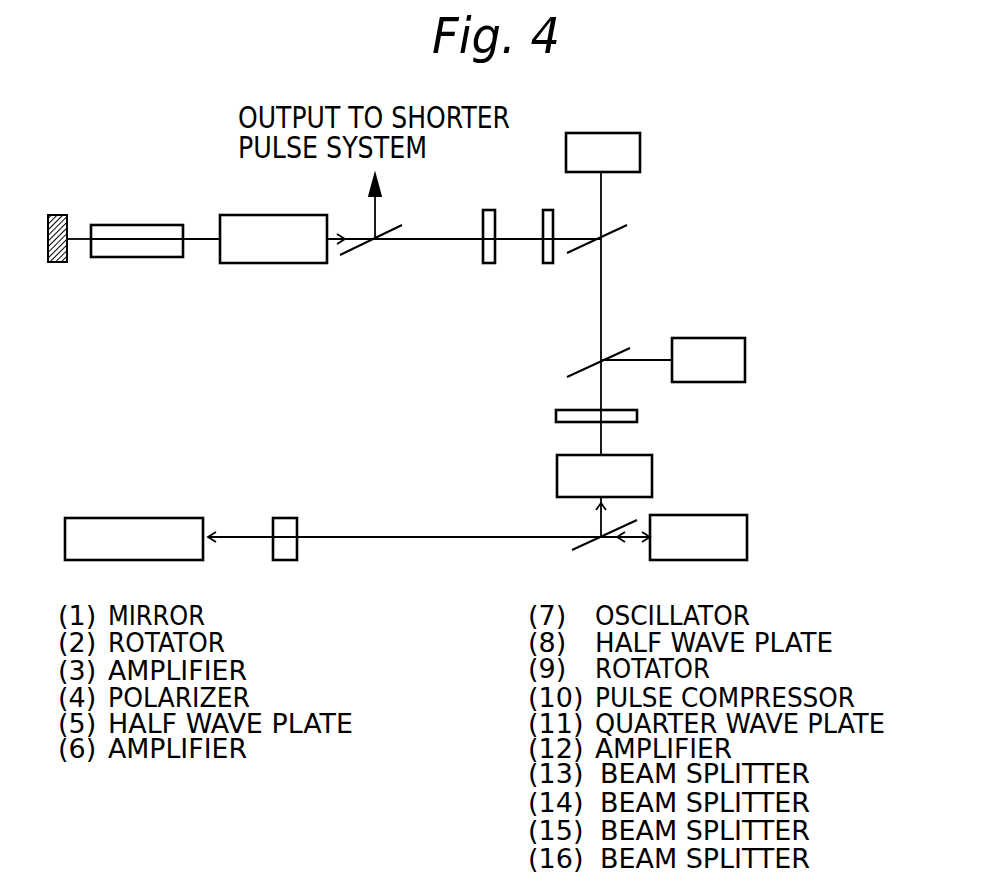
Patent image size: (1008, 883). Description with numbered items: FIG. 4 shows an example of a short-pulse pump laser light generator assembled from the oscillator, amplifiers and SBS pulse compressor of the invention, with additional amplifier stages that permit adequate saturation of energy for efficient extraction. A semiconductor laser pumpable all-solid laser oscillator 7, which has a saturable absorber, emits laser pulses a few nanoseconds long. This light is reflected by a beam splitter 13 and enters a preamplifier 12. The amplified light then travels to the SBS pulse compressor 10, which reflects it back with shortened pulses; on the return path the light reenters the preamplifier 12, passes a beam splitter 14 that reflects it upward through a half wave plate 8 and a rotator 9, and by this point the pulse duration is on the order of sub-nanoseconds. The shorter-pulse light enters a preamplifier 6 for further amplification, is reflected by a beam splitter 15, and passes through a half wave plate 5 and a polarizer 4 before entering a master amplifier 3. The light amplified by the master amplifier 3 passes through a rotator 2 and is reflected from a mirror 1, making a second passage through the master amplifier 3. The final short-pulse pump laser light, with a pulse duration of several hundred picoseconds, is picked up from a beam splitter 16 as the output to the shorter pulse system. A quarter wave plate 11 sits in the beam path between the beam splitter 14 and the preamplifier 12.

The mirror 1 is at (72, 218).
The rotator 2 is at (137, 222).
The master amplifier 3 is at (297, 234).
The polarizer 4 is at (491, 256).
The half wave plate 5 is at (560, 256).
The preamplifier 6 is at (603, 168).
The semiconductor laser pumpable all-solid laser oscillator 7 is at (708, 360).
The half wave plate 8 is at (609, 429).
The rotator 9 is at (604, 492).
The SBS pulse compressor 10 is at (698, 554).
The quarter wave plate 11 is at (259, 521).
The preamplifier 12 is at (134, 539).
The beam splitter 13 is at (570, 358).
The beam splitter 14 is at (581, 546).
The beam splitter 15 is at (628, 231).
The beam splitter 16 is at (391, 223).